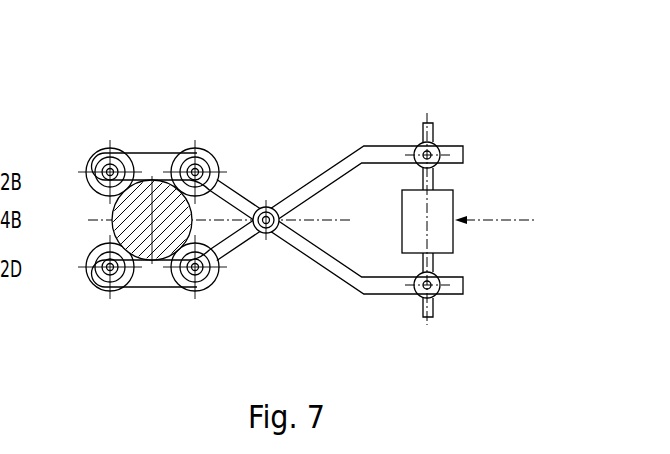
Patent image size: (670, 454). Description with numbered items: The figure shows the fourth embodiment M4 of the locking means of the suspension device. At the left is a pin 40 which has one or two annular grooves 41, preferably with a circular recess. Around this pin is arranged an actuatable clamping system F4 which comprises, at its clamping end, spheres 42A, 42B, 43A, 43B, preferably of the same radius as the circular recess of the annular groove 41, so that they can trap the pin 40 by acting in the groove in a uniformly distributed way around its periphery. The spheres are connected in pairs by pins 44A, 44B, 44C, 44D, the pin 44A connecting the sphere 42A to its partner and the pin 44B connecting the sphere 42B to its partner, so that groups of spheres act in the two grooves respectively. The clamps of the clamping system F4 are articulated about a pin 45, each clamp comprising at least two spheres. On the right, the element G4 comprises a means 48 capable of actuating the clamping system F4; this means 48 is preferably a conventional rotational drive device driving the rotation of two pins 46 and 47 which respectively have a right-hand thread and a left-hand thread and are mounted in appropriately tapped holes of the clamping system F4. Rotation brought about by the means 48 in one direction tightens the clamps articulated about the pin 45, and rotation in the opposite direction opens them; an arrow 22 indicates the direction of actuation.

The fourth embodiment of the locking means M4 is at (311, 86).
The pin 40 is at (108, 230).
The annular groove 41 is at (108, 206).
The sphere 42A is at (98, 151).
The sphere 42B is at (102, 293).
The sphere 43A is at (216, 155).
The sphere 43B is at (185, 293).
The pin connecting spheres 44A is at (125, 168).
The pin connecting spheres 44B is at (92, 287).
The pin connecting spheres 44C is at (203, 145).
The pin connecting spheres 44D is at (216, 292).
The pin 45 is at (264, 208).
The pin with right-hand thread 46 is at (440, 126).
The pin with left-hand thread 47 is at (440, 309).
The means capable of actuating the clamping system 48 is at (452, 207).
The actuation direction 22 is at (489, 222).
The actuatable clamping system F4 is at (281, 276).
The element comprising the actuating means G4 is at (462, 258).